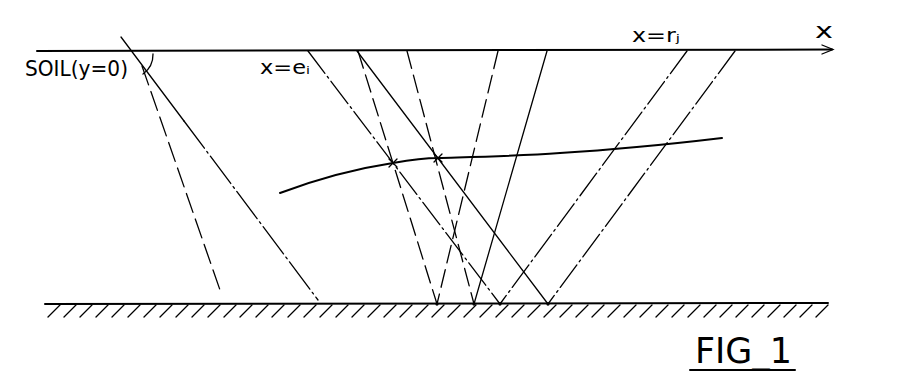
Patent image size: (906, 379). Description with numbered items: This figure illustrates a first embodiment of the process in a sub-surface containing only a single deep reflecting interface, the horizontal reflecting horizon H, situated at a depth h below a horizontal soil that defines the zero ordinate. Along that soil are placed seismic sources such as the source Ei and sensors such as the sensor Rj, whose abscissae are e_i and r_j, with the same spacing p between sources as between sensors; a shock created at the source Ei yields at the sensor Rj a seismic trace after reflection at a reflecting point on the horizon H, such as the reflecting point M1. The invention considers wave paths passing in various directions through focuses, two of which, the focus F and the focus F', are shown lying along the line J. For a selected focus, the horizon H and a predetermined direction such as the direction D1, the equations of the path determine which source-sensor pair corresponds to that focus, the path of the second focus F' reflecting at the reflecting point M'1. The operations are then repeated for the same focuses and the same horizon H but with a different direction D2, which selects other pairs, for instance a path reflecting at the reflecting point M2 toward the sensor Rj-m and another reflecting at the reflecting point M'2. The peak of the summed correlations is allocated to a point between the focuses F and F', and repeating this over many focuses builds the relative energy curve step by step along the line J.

The reflecting interface H is at (245, 309).
The direction D1 is at (187, 120).
The direction D2 is at (204, 242).
The source Ei is at (388, 160).
The sensor Rj is at (604, 157).
The sensor Rj-m is at (478, 160).
The line of focuses J is at (525, 160).
The focus F is at (377, 154).
The focus F' is at (447, 145).
The reflecting point M1 is at (500, 306).
The reflecting point M'1 is at (573, 325).
The reflecting point M2 is at (438, 306).
The reflecting point M'2 is at (467, 329).